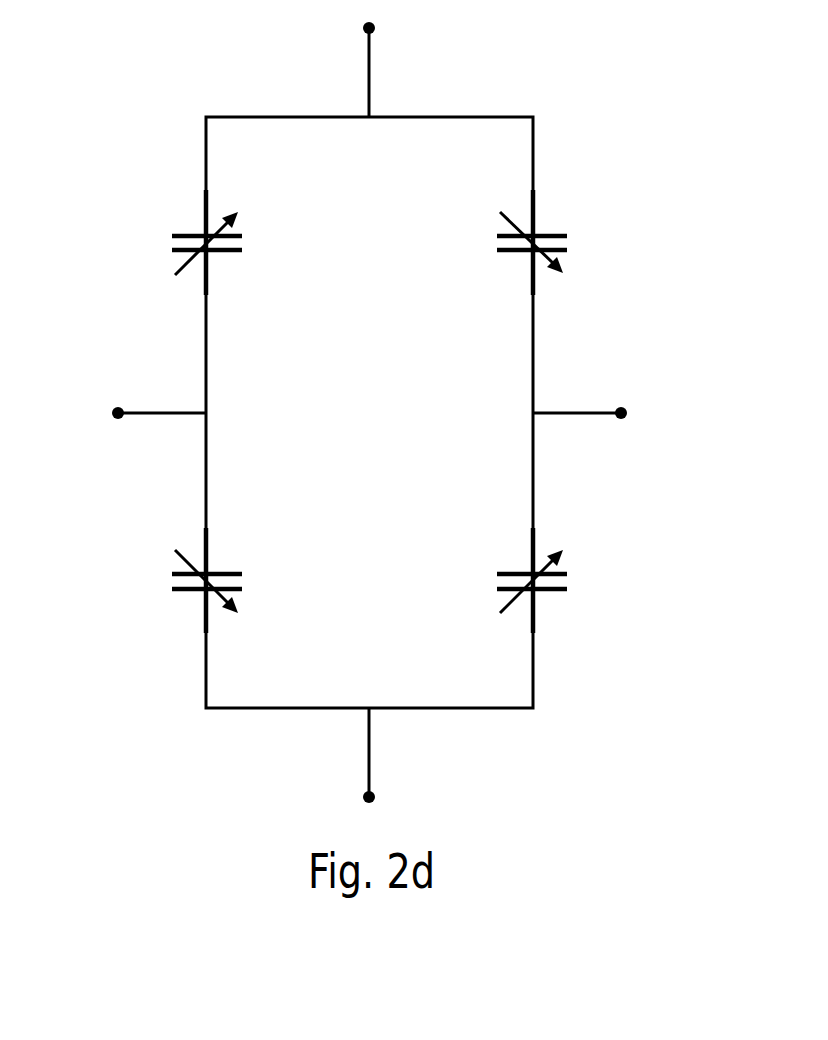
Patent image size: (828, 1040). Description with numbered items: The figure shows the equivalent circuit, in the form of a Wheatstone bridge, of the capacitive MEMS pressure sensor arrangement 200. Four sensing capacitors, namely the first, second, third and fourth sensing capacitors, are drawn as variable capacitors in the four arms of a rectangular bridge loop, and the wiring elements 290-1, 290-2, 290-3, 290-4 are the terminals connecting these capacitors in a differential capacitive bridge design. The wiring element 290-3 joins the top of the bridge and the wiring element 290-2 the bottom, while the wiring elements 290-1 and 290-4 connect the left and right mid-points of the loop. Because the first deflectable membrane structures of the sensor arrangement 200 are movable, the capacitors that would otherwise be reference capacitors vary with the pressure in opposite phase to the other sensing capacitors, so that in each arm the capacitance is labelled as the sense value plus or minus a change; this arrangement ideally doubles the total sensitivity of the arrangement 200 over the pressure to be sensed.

The capacitive MEMS pressure sensor arrangement 200 is at (98, 40).
The wiring element 290-1 is at (163, 412).
The wiring element 290-2 is at (371, 750).
The wiring element 290-3 is at (371, 70).
The wiring element 290-4 is at (577, 412).